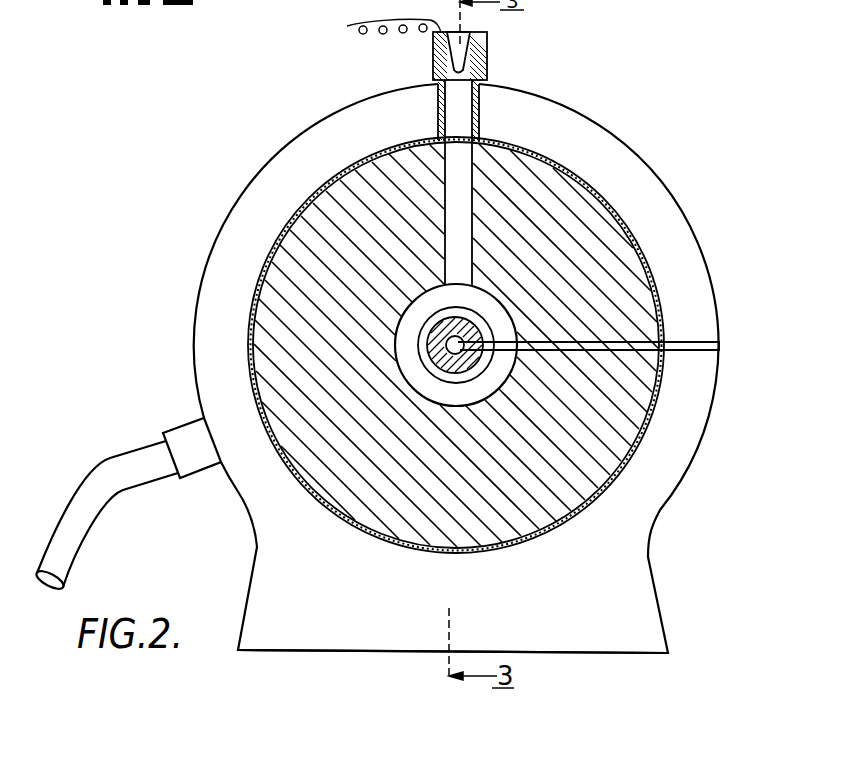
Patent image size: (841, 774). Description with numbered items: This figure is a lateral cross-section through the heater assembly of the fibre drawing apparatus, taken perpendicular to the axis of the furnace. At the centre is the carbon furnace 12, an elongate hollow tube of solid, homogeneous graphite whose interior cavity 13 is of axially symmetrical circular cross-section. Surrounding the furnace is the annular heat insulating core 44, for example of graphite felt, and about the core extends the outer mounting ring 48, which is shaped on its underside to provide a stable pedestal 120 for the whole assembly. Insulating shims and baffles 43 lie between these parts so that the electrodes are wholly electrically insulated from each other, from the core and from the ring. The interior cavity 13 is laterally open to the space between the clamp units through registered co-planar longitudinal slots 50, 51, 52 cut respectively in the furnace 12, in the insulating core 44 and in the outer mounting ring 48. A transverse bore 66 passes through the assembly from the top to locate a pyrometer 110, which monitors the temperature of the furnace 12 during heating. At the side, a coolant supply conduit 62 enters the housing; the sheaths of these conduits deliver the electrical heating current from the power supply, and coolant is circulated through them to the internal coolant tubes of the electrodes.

The pyrometer 110 is at (443, 47).
The transverse bore 66 is at (478, 204).
The insulating shims and baffles 43 is at (630, 233).
The outer mounting ring 48 is at (697, 273).
The longitudinal slot 52 is at (697, 343).
The longitudinal slot 51 is at (648, 383).
The longitudinal slot 50 is at (490, 343).
The annular heat insulating core 44 is at (590, 472).
The pedestal 120 is at (640, 623).
The interior cavity 13 is at (445, 338).
The carbon furnace 12 is at (453, 389).
The coolant supply conduit 62 is at (108, 457).